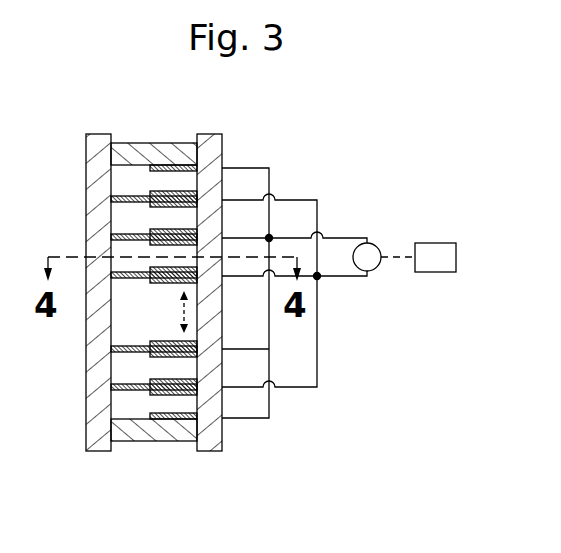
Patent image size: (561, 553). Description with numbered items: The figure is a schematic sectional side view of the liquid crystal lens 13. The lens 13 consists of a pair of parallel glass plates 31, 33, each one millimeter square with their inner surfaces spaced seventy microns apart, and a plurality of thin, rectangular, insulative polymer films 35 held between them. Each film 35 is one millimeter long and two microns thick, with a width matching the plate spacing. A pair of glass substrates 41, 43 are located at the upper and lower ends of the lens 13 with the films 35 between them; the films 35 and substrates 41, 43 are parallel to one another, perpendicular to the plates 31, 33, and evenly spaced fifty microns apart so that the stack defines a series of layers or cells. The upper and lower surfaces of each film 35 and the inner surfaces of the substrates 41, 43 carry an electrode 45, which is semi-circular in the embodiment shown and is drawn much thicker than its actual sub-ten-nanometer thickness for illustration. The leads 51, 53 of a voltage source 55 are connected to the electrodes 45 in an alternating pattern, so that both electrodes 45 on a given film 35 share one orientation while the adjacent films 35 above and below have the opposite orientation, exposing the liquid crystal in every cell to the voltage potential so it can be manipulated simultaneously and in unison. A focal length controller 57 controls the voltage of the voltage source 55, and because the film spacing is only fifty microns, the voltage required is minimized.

The lens 13 is at (382, 140).
The glass plate 31 is at (97, 451).
The glass plate 33 is at (208, 451).
The film 35 is at (134, 341).
The glass substrate 41 is at (144, 142).
The glass substrate 43 is at (163, 441).
The electrode 45 is at (160, 357).
The lead 51 is at (240, 168).
The lead 53 is at (248, 200).
The voltage source 55 is at (376, 245).
The focal length controller 57 is at (430, 243).